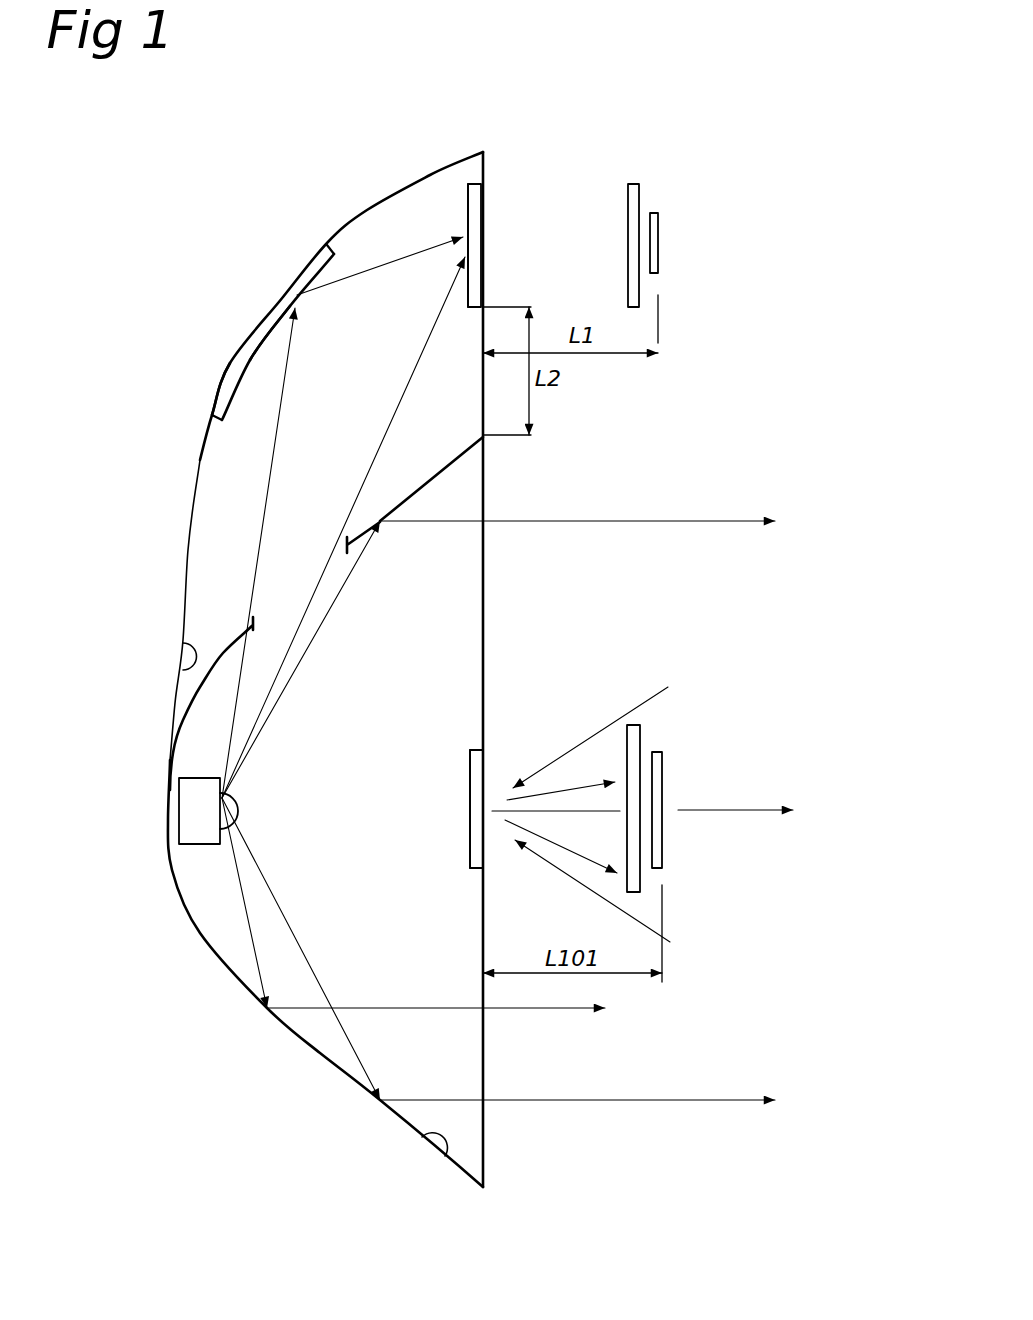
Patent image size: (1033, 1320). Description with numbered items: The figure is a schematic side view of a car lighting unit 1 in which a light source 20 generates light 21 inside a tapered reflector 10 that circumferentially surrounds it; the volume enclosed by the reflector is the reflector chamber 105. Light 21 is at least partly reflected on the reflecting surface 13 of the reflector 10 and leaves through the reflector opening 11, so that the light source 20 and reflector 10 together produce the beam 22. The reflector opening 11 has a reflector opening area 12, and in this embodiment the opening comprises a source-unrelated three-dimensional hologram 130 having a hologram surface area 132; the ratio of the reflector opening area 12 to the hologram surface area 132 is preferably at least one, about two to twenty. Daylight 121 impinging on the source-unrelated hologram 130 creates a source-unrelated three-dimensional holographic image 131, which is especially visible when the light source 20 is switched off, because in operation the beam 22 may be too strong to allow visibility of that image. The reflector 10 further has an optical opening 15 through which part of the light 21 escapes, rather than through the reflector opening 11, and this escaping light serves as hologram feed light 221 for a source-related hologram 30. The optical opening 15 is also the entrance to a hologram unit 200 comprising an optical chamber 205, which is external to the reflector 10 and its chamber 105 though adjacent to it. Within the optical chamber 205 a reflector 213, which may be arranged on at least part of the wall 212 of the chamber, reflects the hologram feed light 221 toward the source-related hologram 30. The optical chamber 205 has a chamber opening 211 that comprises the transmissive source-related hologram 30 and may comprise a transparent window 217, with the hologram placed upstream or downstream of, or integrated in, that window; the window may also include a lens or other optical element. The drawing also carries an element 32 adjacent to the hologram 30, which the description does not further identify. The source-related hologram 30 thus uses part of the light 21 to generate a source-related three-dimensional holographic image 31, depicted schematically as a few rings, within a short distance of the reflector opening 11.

The car lighting unit 1 is at (95, 650).
The reflector 10 is at (320, 1053).
The reflector opening 11 is at (483, 487).
The reflector opening area 12 is at (483, 1135).
The reflecting surface 13 is at (440, 1153).
The optical opening 15 is at (302, 568).
The light source 20 is at (185, 815).
The light 21 is at (287, 490).
The beam 22 is at (722, 1122).
The source-related hologram 30 is at (490, 220).
The source-related 3D holographic image 31 is at (662, 187).
The entry face of first optical element 32 is at (467, 208).
The reflector chamber 105 is at (398, 632).
The daylight 121 is at (583, 748).
The source-unrelated 3D hologram 130 is at (480, 792).
The source-unrelated 3D holographic image 131 is at (647, 868).
The hologram surface area 132 is at (467, 777).
The hologram unit 200 is at (322, 233).
The optical chamber 205 is at (278, 380).
The chamber opening 211 is at (483, 250).
The wall 212 is at (183, 669).
The reflector 213 is at (285, 300).
The transparent window 217 is at (483, 283).
The hologram feed light 221 is at (297, 453).